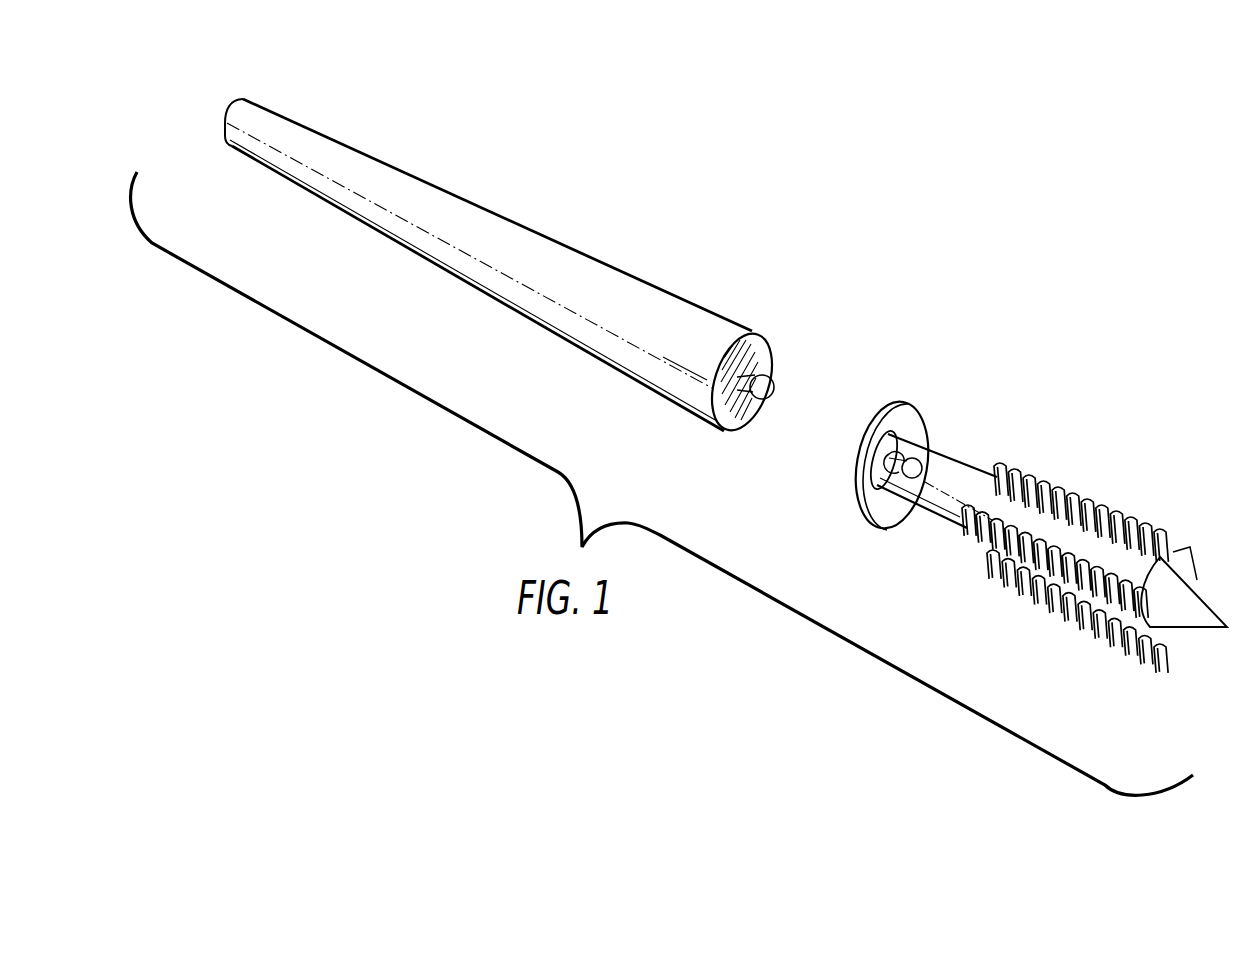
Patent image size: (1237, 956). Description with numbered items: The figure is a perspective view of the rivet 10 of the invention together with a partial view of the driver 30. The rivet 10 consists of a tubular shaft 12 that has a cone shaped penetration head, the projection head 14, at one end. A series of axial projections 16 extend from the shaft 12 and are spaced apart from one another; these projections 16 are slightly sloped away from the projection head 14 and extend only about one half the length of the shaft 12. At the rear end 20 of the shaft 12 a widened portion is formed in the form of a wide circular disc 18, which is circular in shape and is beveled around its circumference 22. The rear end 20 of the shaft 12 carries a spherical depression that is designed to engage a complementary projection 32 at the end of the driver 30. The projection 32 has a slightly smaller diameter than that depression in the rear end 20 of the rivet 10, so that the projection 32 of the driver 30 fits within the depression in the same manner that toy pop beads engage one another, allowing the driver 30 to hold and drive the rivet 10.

The rivet 10 is at (1007, 609).
The tubular shaft 12 is at (951, 514).
The projection head 14 is at (1173, 613).
The axial projections 16 is at (1085, 507).
The wide circular disc 18 is at (870, 502).
The rear end 20 is at (892, 432).
The circumference 22 is at (862, 468).
The driver 30 is at (696, 396).
The projection 32 is at (763, 399).